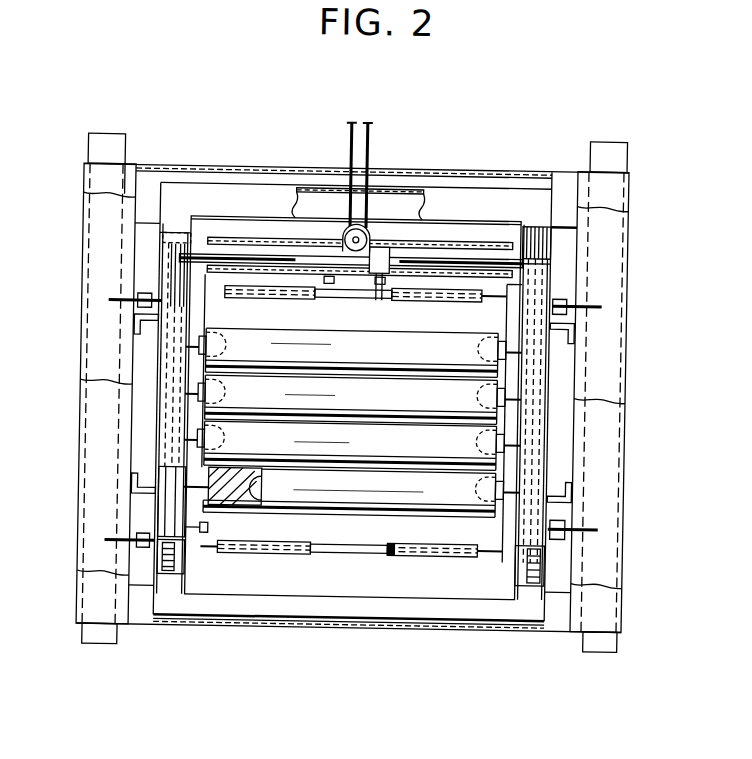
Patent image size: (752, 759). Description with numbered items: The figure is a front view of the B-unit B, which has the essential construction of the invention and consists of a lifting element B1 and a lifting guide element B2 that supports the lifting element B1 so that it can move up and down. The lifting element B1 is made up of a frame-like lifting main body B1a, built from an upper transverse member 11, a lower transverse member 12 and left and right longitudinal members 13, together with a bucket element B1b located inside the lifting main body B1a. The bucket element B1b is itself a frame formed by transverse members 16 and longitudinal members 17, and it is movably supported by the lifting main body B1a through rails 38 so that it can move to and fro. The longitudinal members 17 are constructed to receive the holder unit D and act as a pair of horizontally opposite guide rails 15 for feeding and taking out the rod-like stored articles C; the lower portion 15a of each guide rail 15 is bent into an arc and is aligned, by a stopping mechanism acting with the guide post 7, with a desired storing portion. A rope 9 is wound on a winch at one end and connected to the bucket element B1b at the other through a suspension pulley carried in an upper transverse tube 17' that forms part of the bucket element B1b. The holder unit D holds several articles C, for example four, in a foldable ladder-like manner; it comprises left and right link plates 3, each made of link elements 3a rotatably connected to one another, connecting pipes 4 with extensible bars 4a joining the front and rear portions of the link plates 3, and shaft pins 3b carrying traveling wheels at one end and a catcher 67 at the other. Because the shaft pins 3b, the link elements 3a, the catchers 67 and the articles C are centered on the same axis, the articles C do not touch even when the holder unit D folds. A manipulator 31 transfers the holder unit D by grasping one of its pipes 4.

The link plate 3 is at (189, 545).
The link element 3a is at (498, 468).
The shaft pin 3b is at (191, 436).
The connecting pipe 4 is at (418, 305).
The extensible bar 4a is at (483, 302).
The guide post 7 is at (613, 156).
The rope 9 is at (343, 140).
The upper transverse member 11 is at (168, 170).
The lower transverse member 12 is at (534, 630).
The longitudinal member 13 is at (96, 231).
The guide rail 15 is at (165, 361).
The lower portion of the guide rail 15a is at (500, 628).
The transverse member 16 is at (455, 205).
The longitudinal member 17 is at (356, 402).
The upper transverse tube 17' is at (361, 199).
The manipulator 31 is at (373, 260).
The rail 38 is at (131, 326).
The catcher 67 is at (225, 335).
The B-unit B is at (405, 155).
The lifting element B1 is at (609, 236).
The lifting main body B1a is at (562, 177).
The bucket element B1b is at (504, 194).
The lifting guide element B2 is at (82, 138).
The rod-like stored article C is at (377, 443).
The holder unit D is at (262, 559).